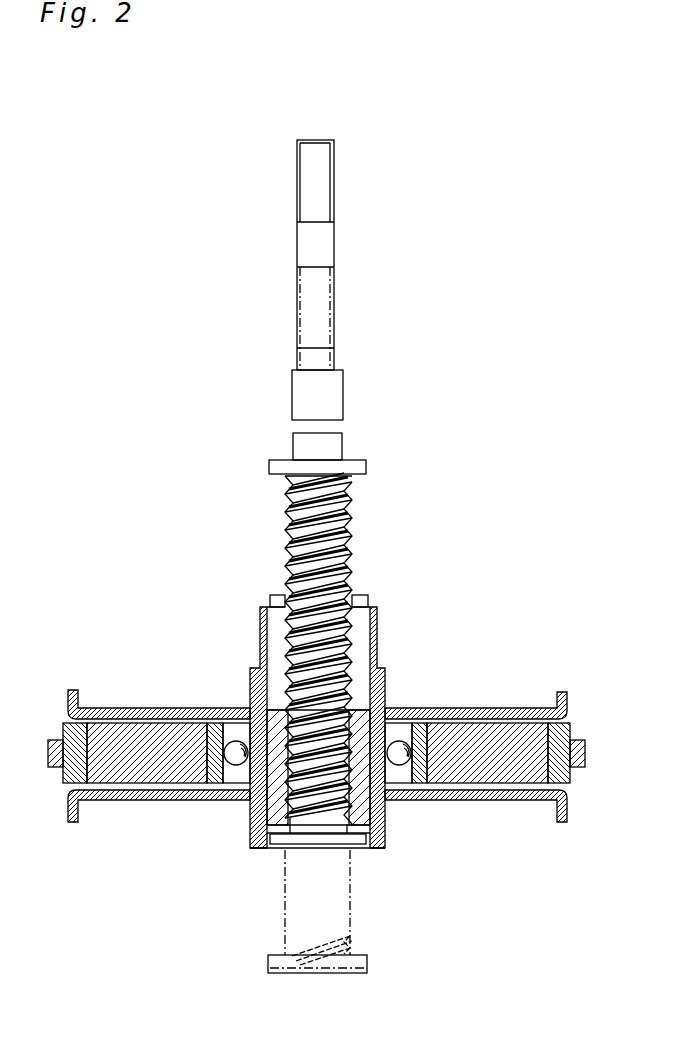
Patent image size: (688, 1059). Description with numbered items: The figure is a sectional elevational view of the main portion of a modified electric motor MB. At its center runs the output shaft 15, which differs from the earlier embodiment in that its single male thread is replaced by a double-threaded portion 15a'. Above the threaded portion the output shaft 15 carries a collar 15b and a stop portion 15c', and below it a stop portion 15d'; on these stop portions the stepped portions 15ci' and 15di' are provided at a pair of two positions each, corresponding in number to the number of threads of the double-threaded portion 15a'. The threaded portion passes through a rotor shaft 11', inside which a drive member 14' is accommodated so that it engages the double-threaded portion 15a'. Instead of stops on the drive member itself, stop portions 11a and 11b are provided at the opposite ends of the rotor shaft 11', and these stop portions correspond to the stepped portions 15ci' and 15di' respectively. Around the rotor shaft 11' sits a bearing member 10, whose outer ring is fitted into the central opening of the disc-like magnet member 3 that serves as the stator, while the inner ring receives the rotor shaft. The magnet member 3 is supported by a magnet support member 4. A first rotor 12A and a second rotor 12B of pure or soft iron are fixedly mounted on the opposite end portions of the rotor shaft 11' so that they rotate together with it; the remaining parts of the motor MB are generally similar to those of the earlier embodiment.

The modified electric motor MB is at (504, 297).
The output shaft 15 is at (334, 275).
The shaft collar 15b is at (343, 388).
The stepped portion 15ci' is at (398, 432).
The stop portion 15c' is at (271, 429).
The double-threaded portion 15a' is at (391, 650).
The stop portion 11a is at (275, 597).
The rotor shaft 11' is at (281, 713).
The drive member 14' is at (263, 729).
The stop portion 11b is at (262, 842).
The magnet member 3 is at (500, 745).
The magnet support member 4 is at (585, 753).
The bearing member 10 is at (405, 778).
The first rotor 12A is at (450, 708).
The second rotor 12B is at (490, 803).
The stop portion 15d' is at (262, 946).
The stepped portion 15di' is at (268, 979).